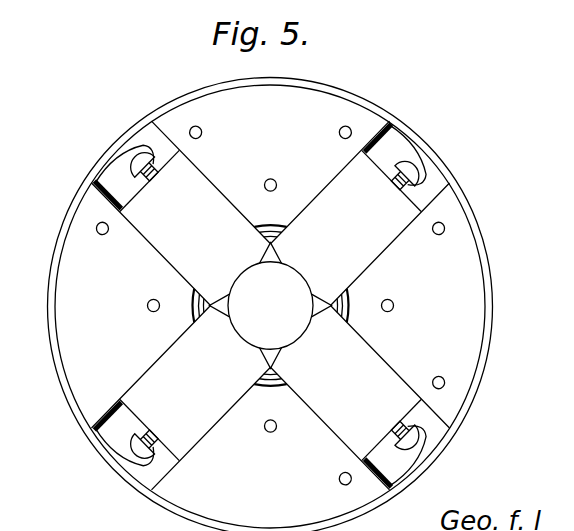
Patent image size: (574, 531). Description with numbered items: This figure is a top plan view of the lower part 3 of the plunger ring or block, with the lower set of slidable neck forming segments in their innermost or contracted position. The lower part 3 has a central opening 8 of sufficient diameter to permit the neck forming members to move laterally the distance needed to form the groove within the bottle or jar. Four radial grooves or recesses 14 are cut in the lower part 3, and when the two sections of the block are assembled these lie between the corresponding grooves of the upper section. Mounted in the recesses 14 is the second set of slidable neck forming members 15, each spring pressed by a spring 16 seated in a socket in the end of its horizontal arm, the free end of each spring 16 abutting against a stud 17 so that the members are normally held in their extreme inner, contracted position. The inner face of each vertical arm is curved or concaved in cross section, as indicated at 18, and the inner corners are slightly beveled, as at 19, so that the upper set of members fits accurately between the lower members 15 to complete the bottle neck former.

The lower part 3 is at (276, 305).
The central opening 8 is at (270, 306).
The radial grooves or recesses 14 is at (398, 136).
The slidable neck forming members 15 is at (271, 305).
The spring 16 is at (97, 175).
The studs 17 is at (127, 142).
The curved or concaved inner face 18 is at (298, 277).
The bevels 19 is at (222, 307).